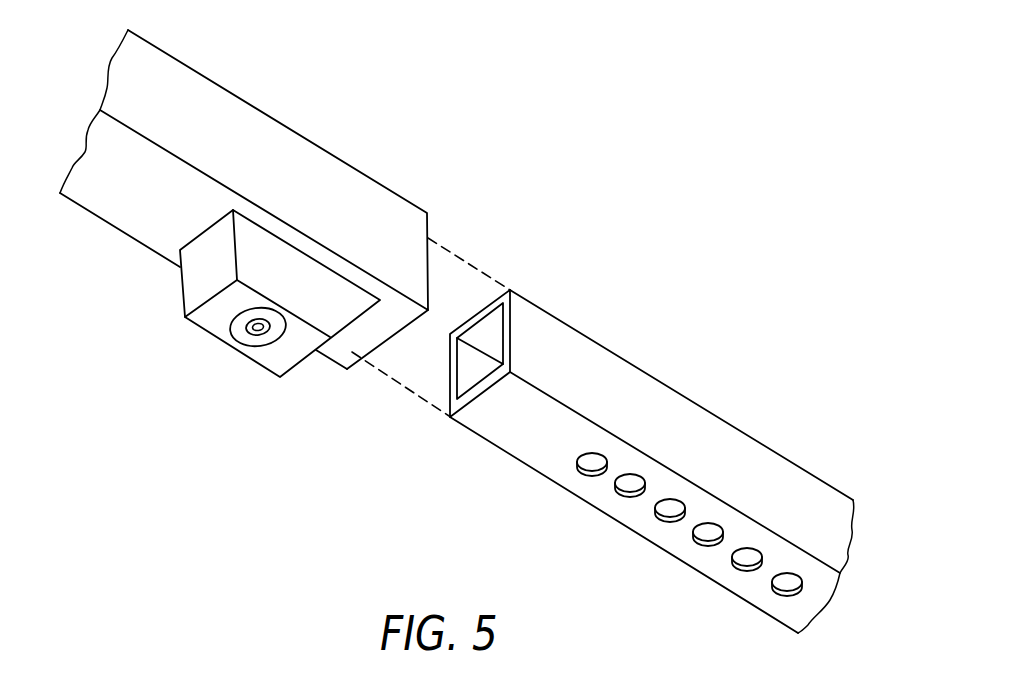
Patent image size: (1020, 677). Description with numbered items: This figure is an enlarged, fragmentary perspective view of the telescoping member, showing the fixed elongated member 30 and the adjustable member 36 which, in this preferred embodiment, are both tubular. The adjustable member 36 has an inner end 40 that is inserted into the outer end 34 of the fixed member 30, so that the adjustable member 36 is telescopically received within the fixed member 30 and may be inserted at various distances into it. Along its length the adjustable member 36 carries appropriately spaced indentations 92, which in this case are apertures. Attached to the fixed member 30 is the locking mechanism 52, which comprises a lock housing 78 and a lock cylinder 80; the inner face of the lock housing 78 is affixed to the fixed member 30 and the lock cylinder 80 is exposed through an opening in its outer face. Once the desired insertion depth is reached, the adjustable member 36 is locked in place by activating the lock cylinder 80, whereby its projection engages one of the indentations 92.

The fixed elongated member 30 is at (258, 142).
The outer end 34 is at (405, 340).
The adjustable member 36 is at (580, 363).
The inner end 40 is at (472, 307).
The locking mechanism 52 is at (168, 347).
The lock housing 78 is at (182, 295).
The lock cylinder 80 is at (256, 338).
The indentations 92 is at (787, 582).